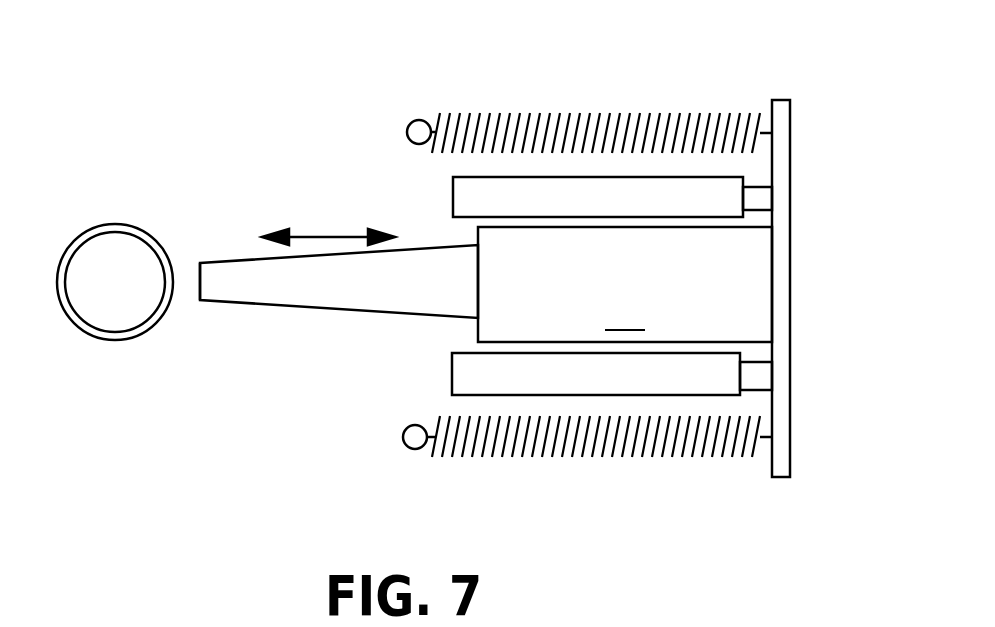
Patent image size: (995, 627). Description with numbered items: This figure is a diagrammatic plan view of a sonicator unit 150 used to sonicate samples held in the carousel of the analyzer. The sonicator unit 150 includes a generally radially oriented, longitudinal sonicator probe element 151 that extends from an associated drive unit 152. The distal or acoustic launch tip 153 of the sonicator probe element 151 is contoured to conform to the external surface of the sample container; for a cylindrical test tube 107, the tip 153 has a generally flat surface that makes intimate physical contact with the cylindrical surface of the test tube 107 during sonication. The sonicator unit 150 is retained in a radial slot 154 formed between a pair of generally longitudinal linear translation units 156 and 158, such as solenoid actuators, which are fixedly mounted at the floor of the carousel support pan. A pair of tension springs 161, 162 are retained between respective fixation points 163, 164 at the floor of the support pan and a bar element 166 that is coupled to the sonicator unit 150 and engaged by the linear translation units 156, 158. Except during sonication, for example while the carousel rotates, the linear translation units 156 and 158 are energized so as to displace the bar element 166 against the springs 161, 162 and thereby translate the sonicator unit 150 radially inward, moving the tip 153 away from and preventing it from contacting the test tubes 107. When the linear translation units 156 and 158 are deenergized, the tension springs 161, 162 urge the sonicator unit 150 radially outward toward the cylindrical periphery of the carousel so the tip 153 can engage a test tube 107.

The test tube 107 is at (118, 221).
The sonicator unit 150 is at (805, 295).
The sonicator probe element 151 is at (337, 312).
The drive unit 152 is at (625, 284).
The acoustic launch tip 153 is at (196, 270).
The radial slot 154 is at (458, 228).
The linear translation unit 156 is at (583, 177).
The linear translation unit 158 is at (603, 395).
The tension spring 161 is at (493, 110).
The tension spring 162 is at (478, 457).
The fixation point 163 is at (410, 128).
The fixation point 164 is at (405, 440).
The bar element 166 is at (792, 152).